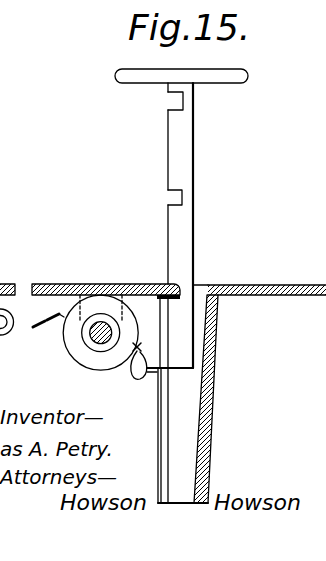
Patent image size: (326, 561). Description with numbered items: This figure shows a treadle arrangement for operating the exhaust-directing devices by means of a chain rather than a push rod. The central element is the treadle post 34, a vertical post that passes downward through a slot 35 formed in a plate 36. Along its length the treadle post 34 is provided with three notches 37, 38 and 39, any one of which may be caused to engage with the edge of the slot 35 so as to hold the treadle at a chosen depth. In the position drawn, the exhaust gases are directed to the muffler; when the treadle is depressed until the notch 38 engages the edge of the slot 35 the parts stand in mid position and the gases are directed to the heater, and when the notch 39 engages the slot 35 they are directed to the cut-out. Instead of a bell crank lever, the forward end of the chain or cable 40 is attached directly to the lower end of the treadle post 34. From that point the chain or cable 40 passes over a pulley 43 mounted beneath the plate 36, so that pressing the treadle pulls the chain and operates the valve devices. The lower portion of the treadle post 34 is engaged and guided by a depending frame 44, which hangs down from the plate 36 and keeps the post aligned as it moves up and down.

The treadle post 34 is at (169, 157).
The slot 35 is at (200, 292).
The plate 36 is at (243, 284).
The notch 37 is at (165, 298).
The notch 38 is at (167, 197).
The notch 39 is at (167, 102).
The chain or cable 40 is at (53, 327).
The pulley 43 is at (90, 360).
The depending frame 44 is at (201, 409).